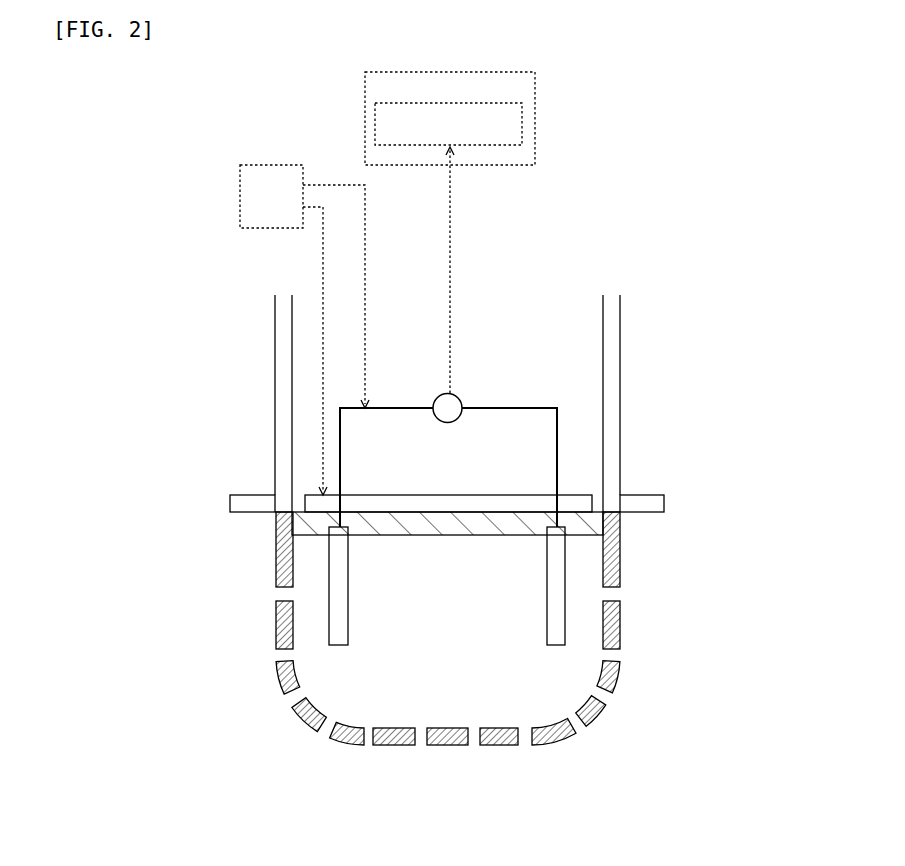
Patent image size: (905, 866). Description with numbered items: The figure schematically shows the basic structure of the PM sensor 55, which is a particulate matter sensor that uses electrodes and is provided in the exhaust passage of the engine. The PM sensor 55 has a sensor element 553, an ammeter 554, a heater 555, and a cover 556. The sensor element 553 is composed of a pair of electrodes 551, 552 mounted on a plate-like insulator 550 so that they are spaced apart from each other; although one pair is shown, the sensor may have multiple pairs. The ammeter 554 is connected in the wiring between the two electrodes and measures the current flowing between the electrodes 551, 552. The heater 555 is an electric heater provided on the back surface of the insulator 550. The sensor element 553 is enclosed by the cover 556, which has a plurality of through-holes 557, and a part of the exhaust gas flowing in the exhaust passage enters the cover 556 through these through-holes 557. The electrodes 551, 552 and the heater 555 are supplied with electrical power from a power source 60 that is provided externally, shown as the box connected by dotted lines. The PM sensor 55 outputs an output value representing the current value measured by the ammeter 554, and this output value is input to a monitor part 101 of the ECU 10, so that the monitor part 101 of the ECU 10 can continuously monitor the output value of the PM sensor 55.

The ECU 10 is at (365, 103).
The monitor part 101 is at (522, 128).
The power source 60 is at (240, 183).
The PM sensor 55 is at (655, 449).
The insulator 550 is at (418, 535).
The electrode 551 is at (348, 618).
The electrode 552 is at (547, 618).
The sensor element 553 is at (462, 633).
The ammeter 554 is at (460, 400).
The heater 555 is at (430, 495).
The cover 556 is at (547, 745).
The through-holes 557 is at (613, 595).